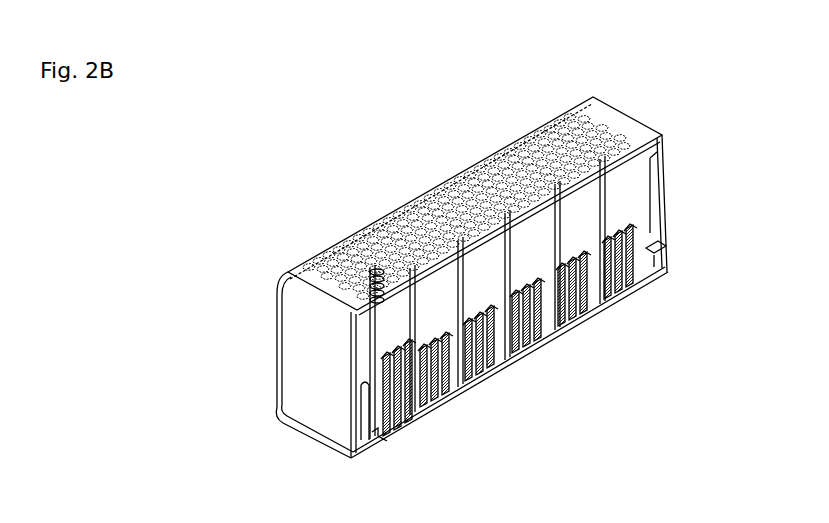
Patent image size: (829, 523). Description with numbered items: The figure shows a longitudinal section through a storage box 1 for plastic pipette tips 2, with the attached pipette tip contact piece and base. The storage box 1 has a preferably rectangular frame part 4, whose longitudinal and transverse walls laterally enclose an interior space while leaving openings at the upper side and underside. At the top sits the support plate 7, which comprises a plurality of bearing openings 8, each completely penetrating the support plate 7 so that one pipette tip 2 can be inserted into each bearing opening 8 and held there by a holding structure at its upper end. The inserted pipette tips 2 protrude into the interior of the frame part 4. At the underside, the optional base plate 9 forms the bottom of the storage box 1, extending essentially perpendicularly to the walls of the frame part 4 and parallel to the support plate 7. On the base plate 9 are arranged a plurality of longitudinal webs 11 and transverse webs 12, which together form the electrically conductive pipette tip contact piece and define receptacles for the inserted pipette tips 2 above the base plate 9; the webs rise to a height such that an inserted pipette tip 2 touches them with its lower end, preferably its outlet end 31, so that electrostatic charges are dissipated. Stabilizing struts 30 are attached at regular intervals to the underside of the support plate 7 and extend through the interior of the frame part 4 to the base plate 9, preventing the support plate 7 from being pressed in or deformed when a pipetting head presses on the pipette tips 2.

The storage box 1 is at (240, 156).
The plastic pipette tip 2 is at (378, 355).
The frame part 4 is at (296, 373).
The support plate 7 is at (623, 125).
The bearing opening 8 is at (538, 142).
The base plate 9 is at (657, 278).
The longitudinal web 11 is at (367, 423).
The transverse web 12 is at (297, 445).
The stabilizing strut 30 is at (602, 200).
The outlet end 31 is at (378, 428).